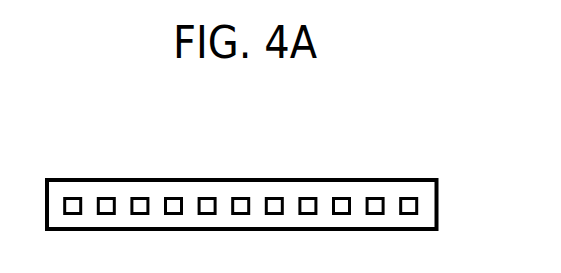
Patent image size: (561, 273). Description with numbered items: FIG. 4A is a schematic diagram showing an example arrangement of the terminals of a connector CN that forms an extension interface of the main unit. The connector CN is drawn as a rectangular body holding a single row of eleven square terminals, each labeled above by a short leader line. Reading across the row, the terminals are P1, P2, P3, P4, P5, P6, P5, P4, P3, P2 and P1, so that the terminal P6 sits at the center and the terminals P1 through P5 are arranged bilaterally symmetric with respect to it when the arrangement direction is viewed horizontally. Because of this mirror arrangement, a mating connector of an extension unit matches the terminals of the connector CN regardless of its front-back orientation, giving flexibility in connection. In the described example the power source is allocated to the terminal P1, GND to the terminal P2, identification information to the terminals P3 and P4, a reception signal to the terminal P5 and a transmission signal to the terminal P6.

The connector CN is at (438, 191).
The terminal P1 is at (68, 197).
The terminal P2 is at (102, 197).
The terminal P3 is at (140, 197).
The terminal P4 is at (170, 197).
The terminal P5 is at (203, 197).
The terminal P6 is at (238, 197).